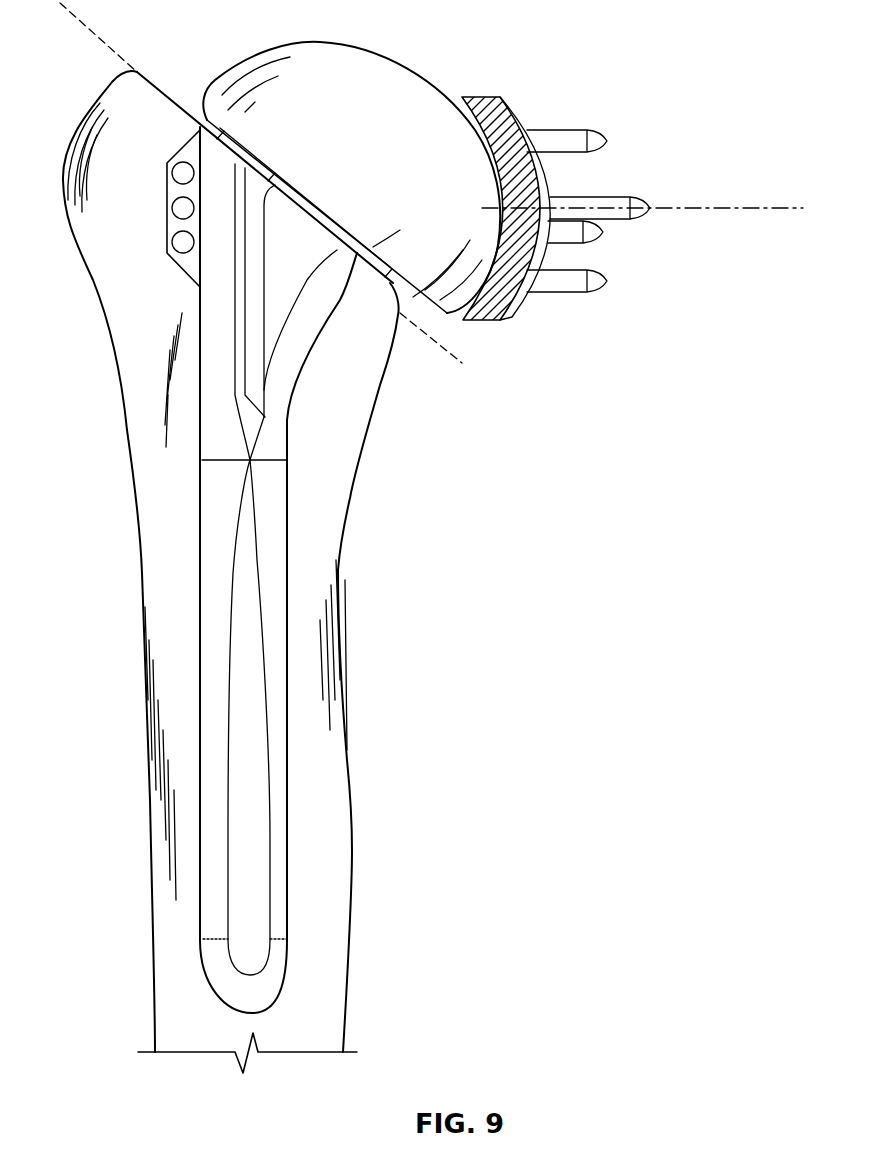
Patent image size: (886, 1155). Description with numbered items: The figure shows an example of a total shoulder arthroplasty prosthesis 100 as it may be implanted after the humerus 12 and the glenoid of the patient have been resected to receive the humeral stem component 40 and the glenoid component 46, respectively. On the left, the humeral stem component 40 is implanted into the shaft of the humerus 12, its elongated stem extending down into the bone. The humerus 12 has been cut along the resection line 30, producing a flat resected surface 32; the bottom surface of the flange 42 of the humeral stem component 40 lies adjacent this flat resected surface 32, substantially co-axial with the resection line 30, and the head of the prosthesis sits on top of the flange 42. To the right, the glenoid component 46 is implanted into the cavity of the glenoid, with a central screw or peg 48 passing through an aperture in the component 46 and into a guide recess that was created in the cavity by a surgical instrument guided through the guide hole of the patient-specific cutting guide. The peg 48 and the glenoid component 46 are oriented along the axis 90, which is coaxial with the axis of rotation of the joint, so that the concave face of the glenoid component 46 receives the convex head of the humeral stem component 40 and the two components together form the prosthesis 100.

The humerus 12 is at (142, 573).
The resection line 30 is at (92, 32).
The flat resected surface 32 is at (143, 78).
The humeral stem component 40 is at (292, 413).
The flange 42 is at (200, 127).
The glenoid component 46 is at (483, 325).
The central screw or peg 48 is at (613, 194).
The axis 90 is at (717, 208).
The total shoulder arthroplasty prosthesis 100 is at (508, 547).